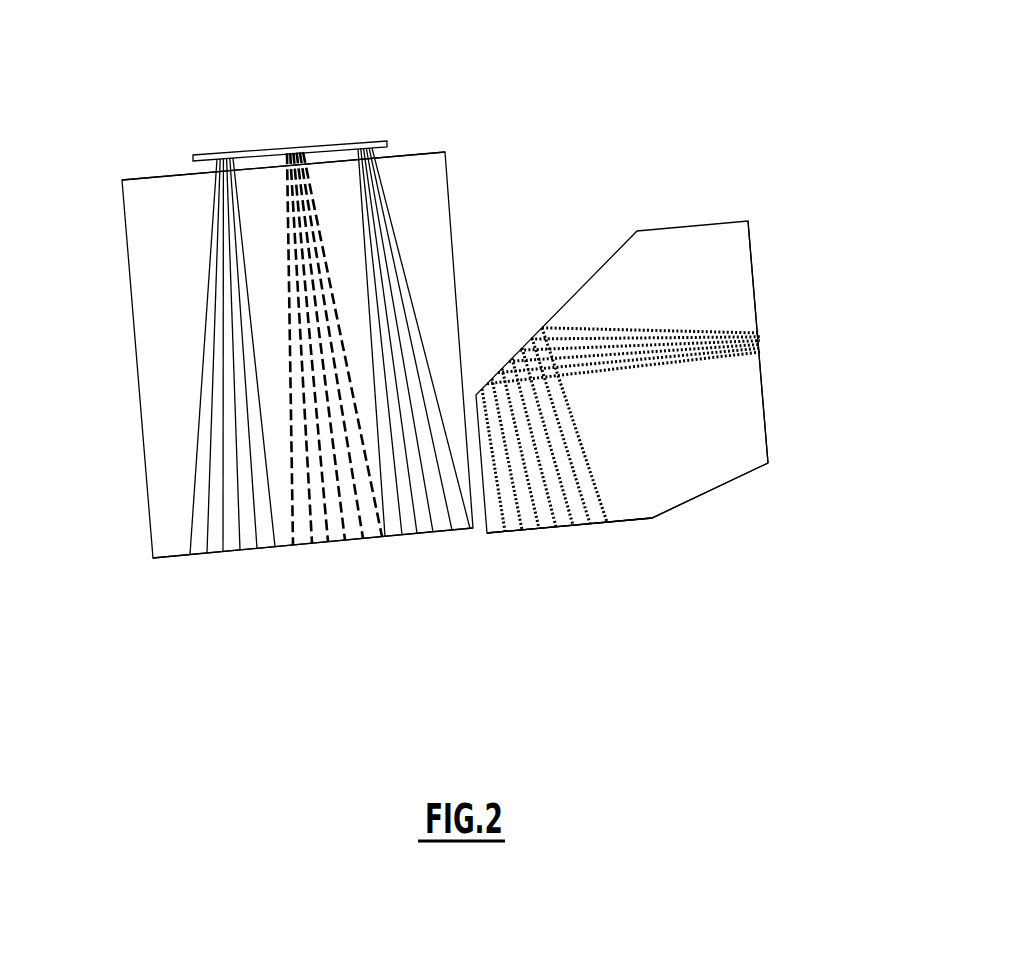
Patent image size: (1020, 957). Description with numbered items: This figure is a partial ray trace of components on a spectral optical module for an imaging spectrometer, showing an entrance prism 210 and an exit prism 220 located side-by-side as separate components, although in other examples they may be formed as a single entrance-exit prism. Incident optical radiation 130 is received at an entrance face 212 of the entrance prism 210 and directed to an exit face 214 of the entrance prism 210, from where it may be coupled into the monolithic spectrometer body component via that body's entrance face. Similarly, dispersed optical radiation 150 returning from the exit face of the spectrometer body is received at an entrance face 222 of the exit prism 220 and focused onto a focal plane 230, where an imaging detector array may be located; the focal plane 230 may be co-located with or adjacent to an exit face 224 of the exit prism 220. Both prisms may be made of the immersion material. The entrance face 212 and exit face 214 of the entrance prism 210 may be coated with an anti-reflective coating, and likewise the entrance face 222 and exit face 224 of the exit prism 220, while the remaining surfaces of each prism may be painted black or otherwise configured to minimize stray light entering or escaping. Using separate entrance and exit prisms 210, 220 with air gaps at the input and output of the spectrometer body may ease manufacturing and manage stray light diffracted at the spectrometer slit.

The incident optical radiation 130 is at (677, 404).
The dispersed optical radiation 150 is at (415, 88).
The entrance prism 210 is at (633, 550).
The entrance face 212 is at (779, 308).
The exit face 214 is at (542, 548).
The exit prism 220 is at (273, 346).
The entrance face 222 is at (298, 565).
The exit face 224 is at (153, 160).
The focal plane 230 is at (398, 126).